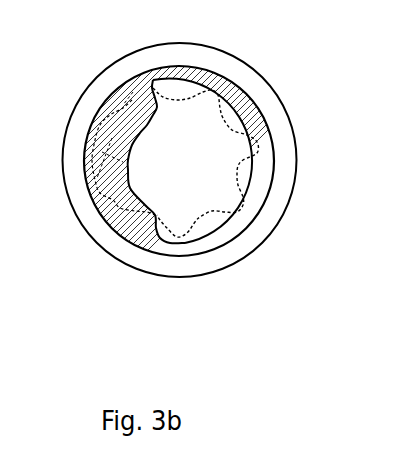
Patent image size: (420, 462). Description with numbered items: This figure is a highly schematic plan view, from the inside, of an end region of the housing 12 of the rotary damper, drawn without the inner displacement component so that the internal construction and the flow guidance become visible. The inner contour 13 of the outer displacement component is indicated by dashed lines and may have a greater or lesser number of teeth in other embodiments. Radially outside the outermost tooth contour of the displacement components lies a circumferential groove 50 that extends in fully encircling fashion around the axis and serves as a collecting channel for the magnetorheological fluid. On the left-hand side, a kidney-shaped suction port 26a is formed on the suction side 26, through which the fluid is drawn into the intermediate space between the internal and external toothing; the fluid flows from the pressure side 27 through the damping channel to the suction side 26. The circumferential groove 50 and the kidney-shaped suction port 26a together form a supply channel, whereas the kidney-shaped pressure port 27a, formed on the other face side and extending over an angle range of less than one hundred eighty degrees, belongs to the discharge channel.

The housing 12 is at (152, 62).
The inner contour 13 is at (237, 166).
The suction side 26 is at (140, 258).
The kidney-shaped suction port 26a is at (132, 100).
The pressure side 27 is at (217, 258).
The kidney-shaped pressure port 27a is at (225, 115).
The circumferential groove 50 is at (205, 77).